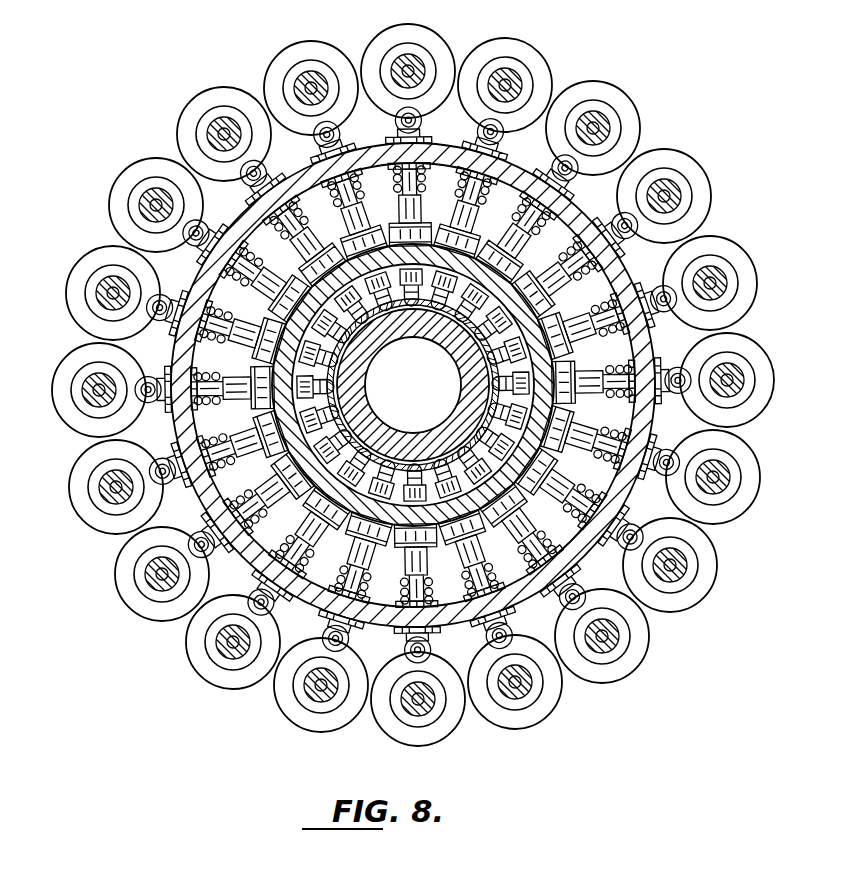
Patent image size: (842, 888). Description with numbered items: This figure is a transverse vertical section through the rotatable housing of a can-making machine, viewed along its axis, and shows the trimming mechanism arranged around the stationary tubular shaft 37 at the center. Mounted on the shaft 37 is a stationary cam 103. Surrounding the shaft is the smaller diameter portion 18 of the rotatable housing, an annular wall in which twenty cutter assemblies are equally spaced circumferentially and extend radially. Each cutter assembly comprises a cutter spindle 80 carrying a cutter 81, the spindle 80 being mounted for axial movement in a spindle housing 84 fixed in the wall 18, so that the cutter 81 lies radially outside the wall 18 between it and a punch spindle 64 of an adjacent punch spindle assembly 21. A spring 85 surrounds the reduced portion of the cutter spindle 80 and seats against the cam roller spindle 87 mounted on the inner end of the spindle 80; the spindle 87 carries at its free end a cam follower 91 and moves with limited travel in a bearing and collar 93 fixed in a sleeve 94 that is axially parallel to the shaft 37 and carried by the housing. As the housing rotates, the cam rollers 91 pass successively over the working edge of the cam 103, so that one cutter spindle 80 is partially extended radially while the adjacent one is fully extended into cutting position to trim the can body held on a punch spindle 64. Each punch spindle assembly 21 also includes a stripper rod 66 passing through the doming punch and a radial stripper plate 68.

The smaller diameter portion 18 is at (498, 165).
The punch spindle assembly 21 is at (390, 30).
The stationary tubular shaft 37 is at (356, 388).
The punch spindle 64 is at (420, 58).
The stripper rod 66 is at (312, 62).
The stripper plate 68 is at (296, 64).
The cutter spindle 80 is at (340, 138).
The cutter 81 is at (262, 166).
The spindle housing 84 is at (560, 214).
The spring 85 is at (420, 190).
The cam roller spindle 87 is at (310, 228).
The cam follower 91 is at (345, 336).
The collar 93 is at (357, 205).
The sleeve 94 is at (480, 232).
The cam 103 is at (500, 386).